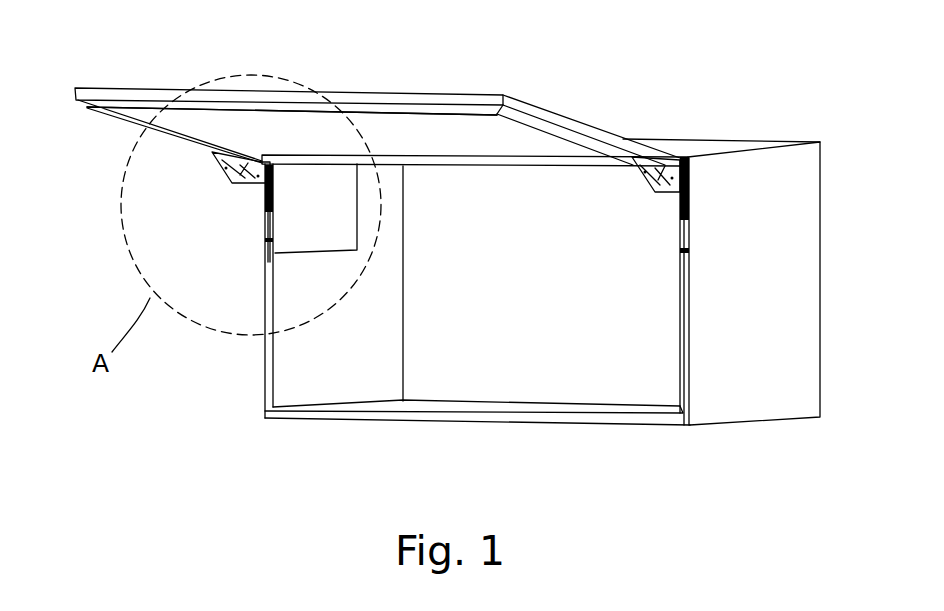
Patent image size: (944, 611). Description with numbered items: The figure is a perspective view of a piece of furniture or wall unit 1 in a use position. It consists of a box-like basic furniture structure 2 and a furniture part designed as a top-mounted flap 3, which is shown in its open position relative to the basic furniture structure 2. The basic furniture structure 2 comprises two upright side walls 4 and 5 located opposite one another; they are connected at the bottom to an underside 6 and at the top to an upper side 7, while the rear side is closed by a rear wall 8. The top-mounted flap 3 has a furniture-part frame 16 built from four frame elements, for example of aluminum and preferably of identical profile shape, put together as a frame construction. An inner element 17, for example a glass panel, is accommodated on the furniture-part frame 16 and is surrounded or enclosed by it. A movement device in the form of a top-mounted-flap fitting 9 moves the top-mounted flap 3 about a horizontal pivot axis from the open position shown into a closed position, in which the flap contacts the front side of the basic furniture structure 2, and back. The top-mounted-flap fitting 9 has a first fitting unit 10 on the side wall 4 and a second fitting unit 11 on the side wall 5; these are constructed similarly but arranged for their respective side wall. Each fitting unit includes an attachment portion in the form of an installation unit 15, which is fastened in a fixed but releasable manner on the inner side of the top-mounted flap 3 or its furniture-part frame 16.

The wall unit 1 is at (447, 262).
The basic furniture structure 2 is at (509, 284).
The top-mounted flap 3 is at (377, 88).
The side wall 4 is at (348, 371).
The side wall 5 is at (764, 335).
The underside 6 is at (423, 423).
The upper side 7 is at (692, 139).
The rear wall 8 is at (548, 308).
The top-mounted-flap fitting 9 is at (520, 368).
The first fitting unit 10 is at (360, 218).
The second fitting unit 11 is at (664, 207).
The installation unit 15 is at (240, 148).
The furniture-part frame 16 is at (550, 108).
The inner element 17 is at (470, 137).